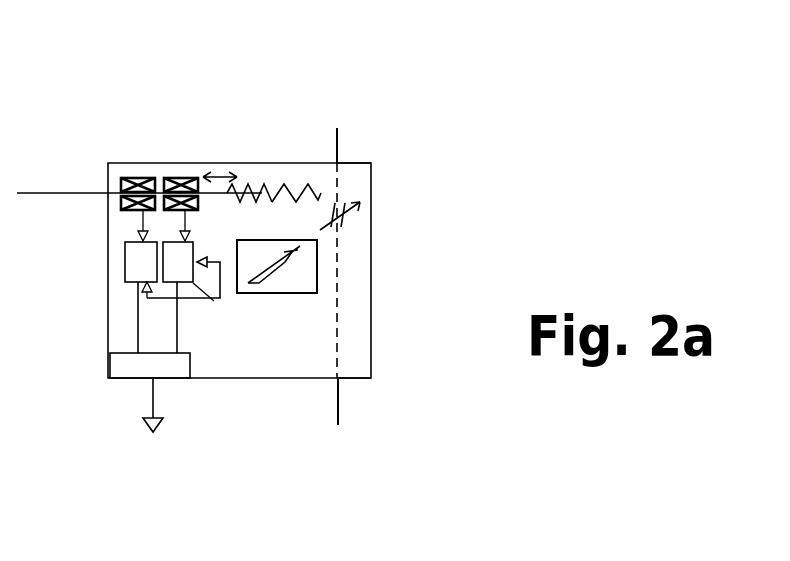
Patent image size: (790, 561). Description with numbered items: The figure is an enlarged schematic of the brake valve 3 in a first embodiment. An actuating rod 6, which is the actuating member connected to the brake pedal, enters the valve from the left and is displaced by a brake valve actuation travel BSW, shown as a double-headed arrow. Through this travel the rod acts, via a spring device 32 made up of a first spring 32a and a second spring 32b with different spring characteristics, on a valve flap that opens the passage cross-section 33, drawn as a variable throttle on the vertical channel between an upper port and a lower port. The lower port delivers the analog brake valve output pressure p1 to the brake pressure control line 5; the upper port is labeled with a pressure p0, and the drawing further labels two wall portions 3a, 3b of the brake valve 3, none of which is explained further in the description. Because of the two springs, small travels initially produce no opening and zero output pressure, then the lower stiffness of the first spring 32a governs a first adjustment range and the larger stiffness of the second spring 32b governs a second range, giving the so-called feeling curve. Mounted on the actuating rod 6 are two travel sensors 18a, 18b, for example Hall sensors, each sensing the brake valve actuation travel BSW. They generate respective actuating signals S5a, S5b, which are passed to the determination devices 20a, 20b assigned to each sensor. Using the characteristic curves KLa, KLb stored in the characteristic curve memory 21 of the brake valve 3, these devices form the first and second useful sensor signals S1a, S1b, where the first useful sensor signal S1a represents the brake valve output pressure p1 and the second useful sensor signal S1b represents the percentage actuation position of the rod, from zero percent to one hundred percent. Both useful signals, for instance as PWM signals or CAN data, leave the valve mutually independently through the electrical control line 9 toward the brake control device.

The brake valve 3 is at (263, 261).
The housing wall / first end 3a is at (338, 163).
The housing wall / second end 3b is at (338, 378).
The brake pressure control line 5 is at (338, 410).
The actuating rod 6 is at (87, 190).
The electrical control line 9 is at (153, 398).
The first travel sensor 18a is at (133, 177).
The second travel sensor 18b is at (183, 177).
The first determination device 20a is at (125, 265).
The second determination device 20b is at (205, 290).
The characteristic curve memory 21 is at (382, 335).
The spring device 32 is at (301, 142).
The first spring 32a is at (255, 187).
The second spring 32b is at (310, 187).
The passage cross-section 33 is at (348, 218).
The brake valve actuation travel BSW is at (218, 177).
The first actuating signal S5a is at (143, 218).
The second actuating signal S5b is at (190, 220).
The first useful sensor signal S1a is at (138, 318).
The second useful sensor signal S1b is at (177, 335).
The first characteristic curve KLa is at (388, 263).
The second characteristic curve KLb is at (290, 255).
The inlet pressure p0 is at (342, 138).
The brake valve output pressure p1 is at (338, 418).